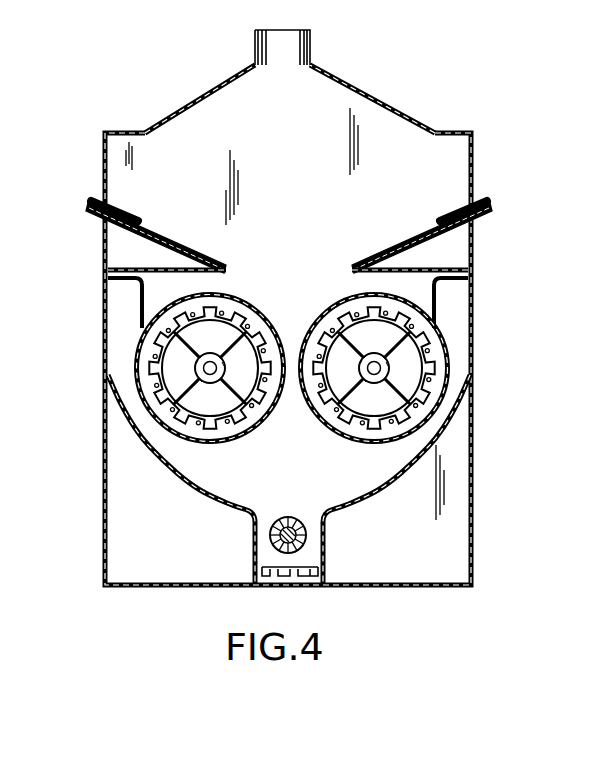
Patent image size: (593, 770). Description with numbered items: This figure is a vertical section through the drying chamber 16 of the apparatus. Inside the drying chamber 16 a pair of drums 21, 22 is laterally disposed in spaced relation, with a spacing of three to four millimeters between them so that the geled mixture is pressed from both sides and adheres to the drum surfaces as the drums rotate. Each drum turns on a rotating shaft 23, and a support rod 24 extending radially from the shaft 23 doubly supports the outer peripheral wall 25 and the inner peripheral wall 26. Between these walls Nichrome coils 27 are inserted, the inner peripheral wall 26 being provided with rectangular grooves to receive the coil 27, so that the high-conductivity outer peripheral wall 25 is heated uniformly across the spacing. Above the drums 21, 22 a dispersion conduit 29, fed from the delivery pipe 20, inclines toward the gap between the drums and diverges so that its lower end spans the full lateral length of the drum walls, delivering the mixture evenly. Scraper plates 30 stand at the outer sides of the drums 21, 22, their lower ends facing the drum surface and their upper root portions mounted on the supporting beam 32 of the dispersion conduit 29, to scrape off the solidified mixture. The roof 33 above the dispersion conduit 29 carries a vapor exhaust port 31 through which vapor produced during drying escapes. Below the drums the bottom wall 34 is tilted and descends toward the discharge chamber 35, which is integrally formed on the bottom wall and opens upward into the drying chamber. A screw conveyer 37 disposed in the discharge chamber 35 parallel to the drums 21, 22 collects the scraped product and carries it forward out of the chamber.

The drying chamber 16 is at (494, 100).
The delivery pipe 20 is at (480, 201).
The drum 21 is at (411, 368).
The drum 22 is at (274, 350).
The rotating shaft 23 is at (195, 368).
The support rod 24 is at (390, 370).
The outer peripheral wall 25 is at (132, 392).
The inner peripheral wall 26 is at (254, 308).
The Nichrome coil 27 is at (227, 311).
The dispersion conduit 29 is at (165, 244).
The scraper plate 30 is at (437, 302).
The vapor exhaust port 31 is at (312, 52).
The supporting beam 32 is at (470, 251).
The roof 33 is at (398, 104).
The bottom wall 34 is at (428, 464).
The discharge chamber 35 is at (254, 550).
The screw conveyer 37 is at (306, 541).